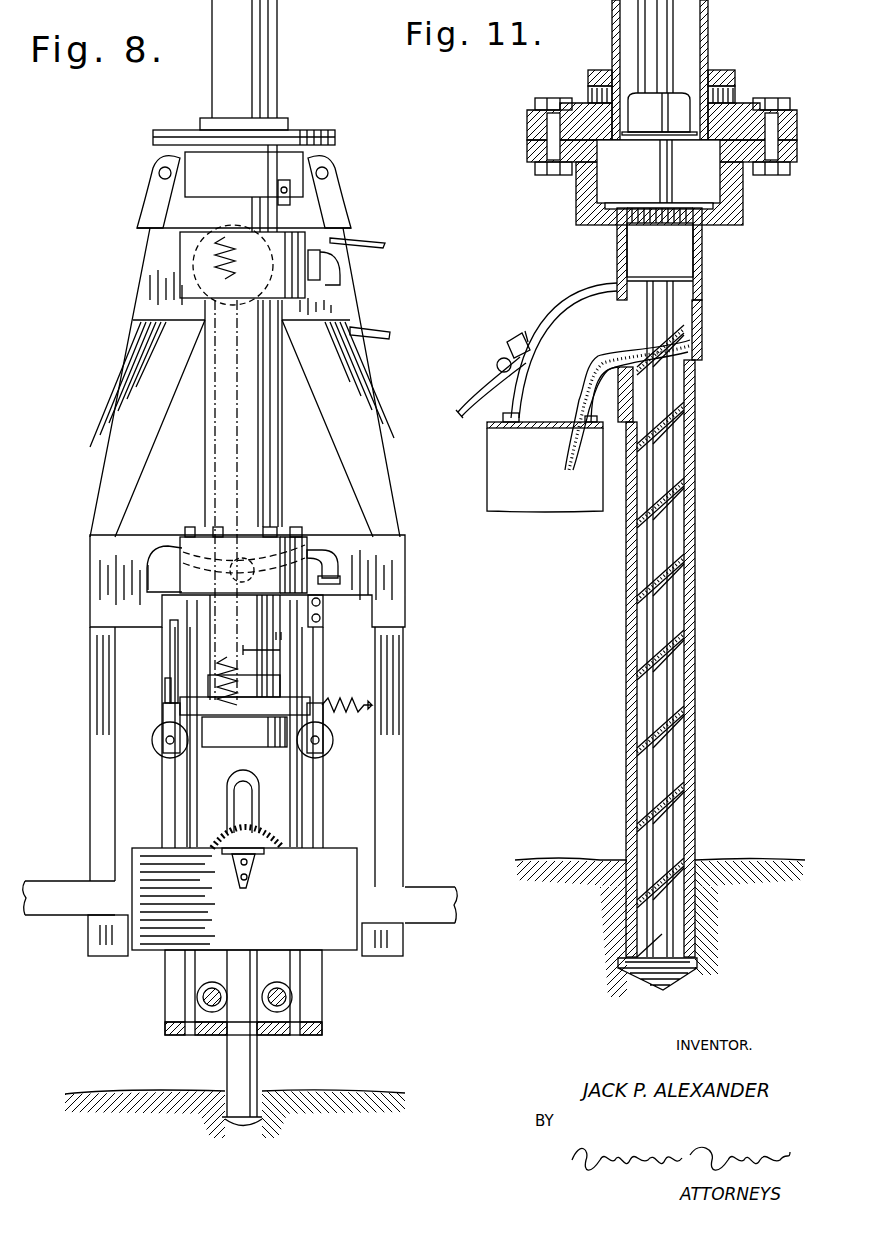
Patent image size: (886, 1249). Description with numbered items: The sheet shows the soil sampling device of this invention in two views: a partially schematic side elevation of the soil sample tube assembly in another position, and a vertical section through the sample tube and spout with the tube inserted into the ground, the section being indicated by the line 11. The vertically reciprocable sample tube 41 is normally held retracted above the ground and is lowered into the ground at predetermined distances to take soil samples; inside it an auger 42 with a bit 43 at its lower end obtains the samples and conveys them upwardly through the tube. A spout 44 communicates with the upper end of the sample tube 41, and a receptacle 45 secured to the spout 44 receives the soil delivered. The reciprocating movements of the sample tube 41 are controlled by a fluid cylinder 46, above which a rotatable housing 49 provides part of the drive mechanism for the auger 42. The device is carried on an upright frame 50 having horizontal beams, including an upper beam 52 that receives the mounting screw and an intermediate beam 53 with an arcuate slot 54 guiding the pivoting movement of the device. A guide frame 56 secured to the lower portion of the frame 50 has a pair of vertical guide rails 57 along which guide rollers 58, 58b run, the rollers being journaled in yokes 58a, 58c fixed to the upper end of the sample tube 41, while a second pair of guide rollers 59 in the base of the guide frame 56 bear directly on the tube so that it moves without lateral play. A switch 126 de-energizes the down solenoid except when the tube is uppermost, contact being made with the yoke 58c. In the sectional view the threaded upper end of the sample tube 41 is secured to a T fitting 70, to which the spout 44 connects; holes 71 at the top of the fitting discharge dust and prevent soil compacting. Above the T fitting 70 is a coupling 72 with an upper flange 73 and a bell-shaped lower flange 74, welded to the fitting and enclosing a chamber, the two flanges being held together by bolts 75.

In FIG. 8, the section line of FIG. 11 is at (245, 1140).
In FIG. 8, the sample tube 41 is at (235, 1072).
In FIG. 11, the sample tube 41 is at (695, 575).
In FIG. 11, the auger 42 is at (665, 690).
In FIG. 11, the bit 43 is at (637, 965).
In FIG. 11, the spout 44 is at (560, 320).
In FIG. 8, the receptacle 45 is at (258, 931).
In FIG. 11, the receptacle 45 is at (518, 503).
In FIG. 8, the fluid cylinder 46 is at (282, 483).
In FIG. 8, the rotatable housing 49 is at (277, 47).
In FIG. 8, the upright frame 50 is at (115, 460).
In FIG. 8, the upper beam 52 is at (156, 286).
In FIG. 8, the beam 53 is at (95, 577).
In FIG. 8, the arcuate slot 54 is at (163, 548).
In FIG. 8, the guide frame 56 is at (165, 1005).
In FIG. 8, the vertical guide rails 57 is at (188, 792).
In FIG. 8, the guide roller 58 is at (160, 738).
In FIG. 8, the yoke 58a is at (172, 705).
In FIG. 8, the guide roller 58b is at (335, 742).
In FIG. 8, the yoke 58c is at (322, 722).
In FIG. 8, the guide rollers 59 is at (213, 1012).
In FIG. 11, the T fitting 70 is at (698, 330).
In FIG. 11, the holes 71 is at (705, 243).
In FIG. 11, the coupling 72 is at (616, 162).
In FIG. 11, the upper flange 73 is at (533, 116).
In FIG. 11, the lower flange 74 is at (528, 158).
In FIG. 11, the bolts 75 is at (558, 98).
In FIG. 8, the switch 126 is at (325, 606).